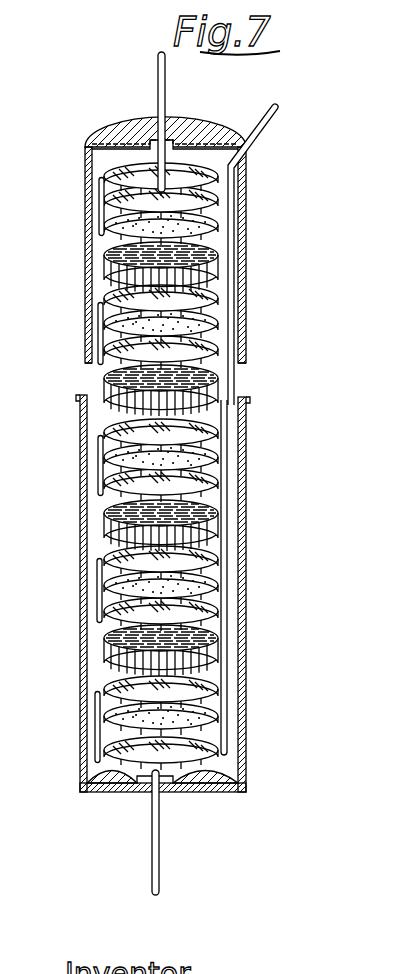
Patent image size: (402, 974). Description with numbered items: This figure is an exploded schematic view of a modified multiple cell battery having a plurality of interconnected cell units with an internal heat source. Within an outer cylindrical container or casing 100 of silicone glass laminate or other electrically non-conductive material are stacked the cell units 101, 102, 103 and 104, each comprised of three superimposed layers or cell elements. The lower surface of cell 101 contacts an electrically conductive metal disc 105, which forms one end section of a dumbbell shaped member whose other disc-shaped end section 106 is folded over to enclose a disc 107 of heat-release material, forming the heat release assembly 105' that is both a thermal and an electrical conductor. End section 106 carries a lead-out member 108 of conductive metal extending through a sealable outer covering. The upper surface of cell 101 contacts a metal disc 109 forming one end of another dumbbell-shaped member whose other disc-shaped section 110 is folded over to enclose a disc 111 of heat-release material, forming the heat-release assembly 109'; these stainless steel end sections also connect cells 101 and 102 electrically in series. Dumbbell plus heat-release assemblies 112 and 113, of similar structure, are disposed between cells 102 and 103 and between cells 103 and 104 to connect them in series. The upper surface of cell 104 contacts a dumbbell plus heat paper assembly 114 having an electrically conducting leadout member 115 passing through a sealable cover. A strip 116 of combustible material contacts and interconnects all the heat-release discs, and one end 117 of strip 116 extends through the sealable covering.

The outer cylindrical container or casing 100 is at (82, 641).
The cell unit 101 is at (208, 657).
The cell unit 102 is at (207, 527).
The cell unit 103 is at (207, 388).
The cell unit 104 is at (217, 273).
The electrically conductive metal disc 105 is at (197, 692).
The heat release assembly (dumbbell shaped member) 105' is at (60, 729).
The disc-shaped end section 106 is at (192, 756).
The disc of heat-release material 107 is at (210, 717).
The lead-out member 108 is at (154, 838).
The metal disc 109 is at (201, 621).
The heat-release assembly 109' is at (64, 591).
The disc-shaped section 110 is at (200, 562).
The disc of heat-release material 111 is at (203, 584).
The dumbbell plus heat-release assembly 112 is at (95, 448).
The dumbbell plus heat-release assembly 113 is at (97, 316).
The dumbbell plus heat paper assembly 114 is at (103, 195).
The electrically conducting leadout member 115 is at (160, 88).
The strip of combustible material 116 is at (242, 203).
The end of strip 117 is at (273, 112).